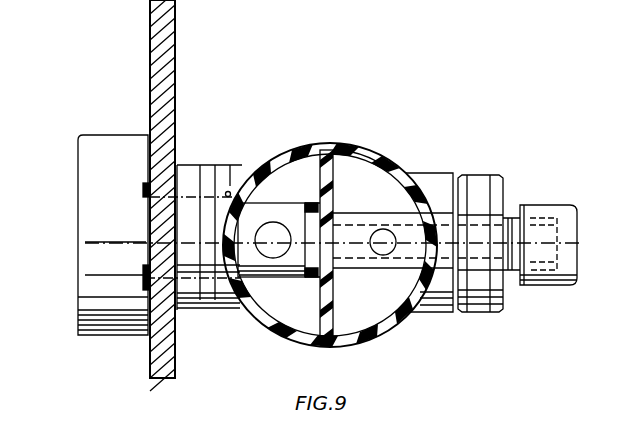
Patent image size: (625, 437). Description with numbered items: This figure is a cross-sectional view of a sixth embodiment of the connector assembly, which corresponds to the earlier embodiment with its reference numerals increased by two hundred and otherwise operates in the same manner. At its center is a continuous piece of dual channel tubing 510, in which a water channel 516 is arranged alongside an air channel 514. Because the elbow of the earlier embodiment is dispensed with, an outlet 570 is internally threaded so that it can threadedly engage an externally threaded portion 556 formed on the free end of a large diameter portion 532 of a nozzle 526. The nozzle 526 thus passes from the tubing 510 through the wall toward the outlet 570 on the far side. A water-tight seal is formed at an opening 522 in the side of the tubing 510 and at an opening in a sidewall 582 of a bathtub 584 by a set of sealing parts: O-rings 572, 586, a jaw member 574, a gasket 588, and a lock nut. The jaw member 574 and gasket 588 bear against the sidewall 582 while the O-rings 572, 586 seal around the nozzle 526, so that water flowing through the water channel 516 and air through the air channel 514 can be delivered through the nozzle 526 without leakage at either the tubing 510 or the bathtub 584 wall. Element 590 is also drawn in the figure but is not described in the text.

The dual channel tubing 510 is at (373, 328).
The air channel 514 is at (320, 150).
The water channel 516 is at (345, 162).
The opening 522 is at (258, 208).
The nozzle 526 is at (366, 210).
The large diameter portion 532 is at (283, 278).
The externally threaded portion 556 is at (190, 203).
The outlet 570 is at (80, 165).
The O-ring 572 is at (228, 190).
The jaw member 574 is at (222, 310).
The sidewall 582 is at (152, 52).
The bathtub 584 is at (150, 372).
The O-ring 586 is at (147, 190).
The gasket 588 is at (178, 310).
The upper bracket 590 is at (208, 168).